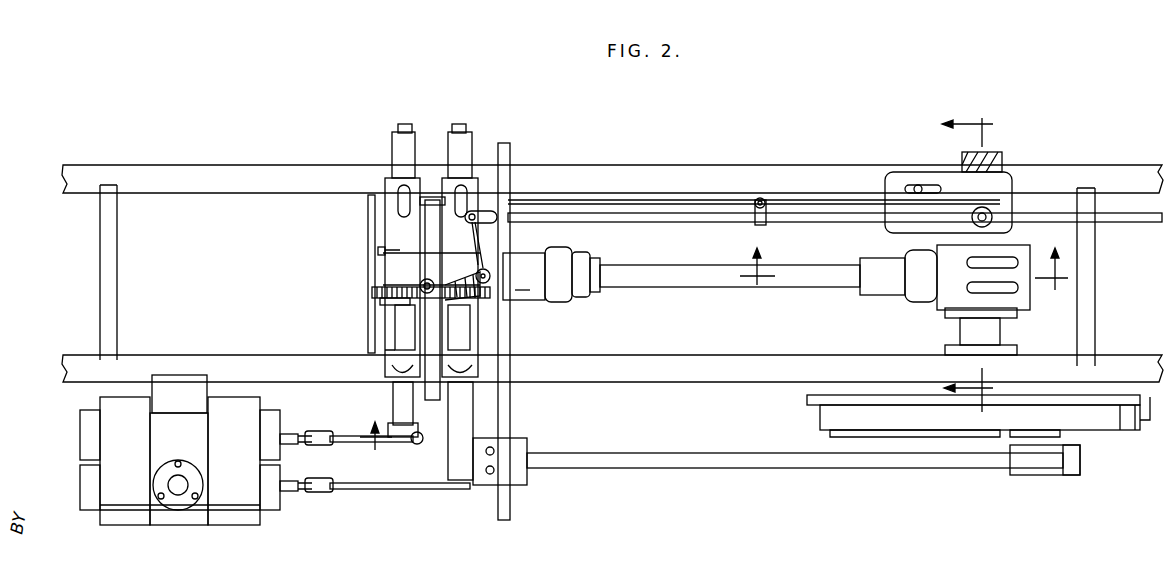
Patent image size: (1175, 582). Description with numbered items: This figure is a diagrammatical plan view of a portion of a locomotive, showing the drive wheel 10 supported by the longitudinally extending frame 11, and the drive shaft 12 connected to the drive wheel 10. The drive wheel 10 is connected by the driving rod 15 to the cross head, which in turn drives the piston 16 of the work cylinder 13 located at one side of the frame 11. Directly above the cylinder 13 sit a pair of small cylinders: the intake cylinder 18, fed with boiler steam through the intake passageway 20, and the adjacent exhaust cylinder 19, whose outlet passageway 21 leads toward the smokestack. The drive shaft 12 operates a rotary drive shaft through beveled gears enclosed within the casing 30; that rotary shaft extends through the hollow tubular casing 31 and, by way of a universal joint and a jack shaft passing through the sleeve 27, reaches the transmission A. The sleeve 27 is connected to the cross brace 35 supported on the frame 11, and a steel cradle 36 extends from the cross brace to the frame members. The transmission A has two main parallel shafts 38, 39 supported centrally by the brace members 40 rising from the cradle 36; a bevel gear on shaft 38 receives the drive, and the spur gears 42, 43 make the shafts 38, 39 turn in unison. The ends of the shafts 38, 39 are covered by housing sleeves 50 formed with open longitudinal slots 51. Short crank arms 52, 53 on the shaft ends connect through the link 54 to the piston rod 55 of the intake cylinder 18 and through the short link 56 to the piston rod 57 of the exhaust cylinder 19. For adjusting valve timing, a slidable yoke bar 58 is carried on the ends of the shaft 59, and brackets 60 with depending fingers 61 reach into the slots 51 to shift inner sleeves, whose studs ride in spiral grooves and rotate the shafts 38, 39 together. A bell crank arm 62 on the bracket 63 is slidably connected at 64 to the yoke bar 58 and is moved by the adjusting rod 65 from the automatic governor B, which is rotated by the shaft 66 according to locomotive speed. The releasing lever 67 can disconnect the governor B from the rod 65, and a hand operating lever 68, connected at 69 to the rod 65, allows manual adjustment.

The drive wheel 10 is at (820, 415).
The frame 11 is at (712, 170).
The drive shaft 12 is at (1002, 160).
The cylinder 13 is at (503, 272).
The driving rod 15 is at (838, 493).
The piston 16 is at (968, 263).
The intake cylinder 18 is at (275, 512).
The exhaust cylinder 19 is at (282, 433).
The intake passageway 20 is at (178, 492).
The outlet passageway 21 is at (185, 378).
The sleeve 27 is at (578, 255).
The casing 30 is at (935, 300).
The hollow tubular casing 31 is at (703, 288).
The cross brace 35 is at (508, 214).
The steel cradle 36 is at (368, 240).
The transmission shaft 38 is at (466, 125).
The transmission shaft 39 is at (410, 125).
The brace members 40 is at (383, 255).
The spur gear 42 is at (488, 300).
The spur gear 43 is at (385, 300).
The housing sleeve 50 is at (395, 160).
The longitudinal slot 51 is at (405, 322).
The crank arm 52 is at (485, 485).
The crank arm 53 is at (417, 445).
The link 54 is at (408, 490).
The piston rod 55 is at (302, 491).
The short link 56 is at (360, 436).
The piston rod 57 is at (302, 444).
The yoke bar 58 is at (405, 220).
The shaft 59 is at (430, 198).
The bracket 60 is at (490, 232).
The depending finger 61 is at (378, 255).
The bell crank arm 62 is at (545, 250).
The bracket 63 is at (520, 300).
The slidable connection 64 is at (432, 281).
The adjusting rod 65 is at (578, 222).
The shaft 66 is at (998, 220).
The releasing lever 67 is at (918, 185).
The hand operating lever 68 is at (762, 198).
The connection 69 is at (755, 222).
The transmission A is at (383, 283).
The automatic governor B is at (895, 225).